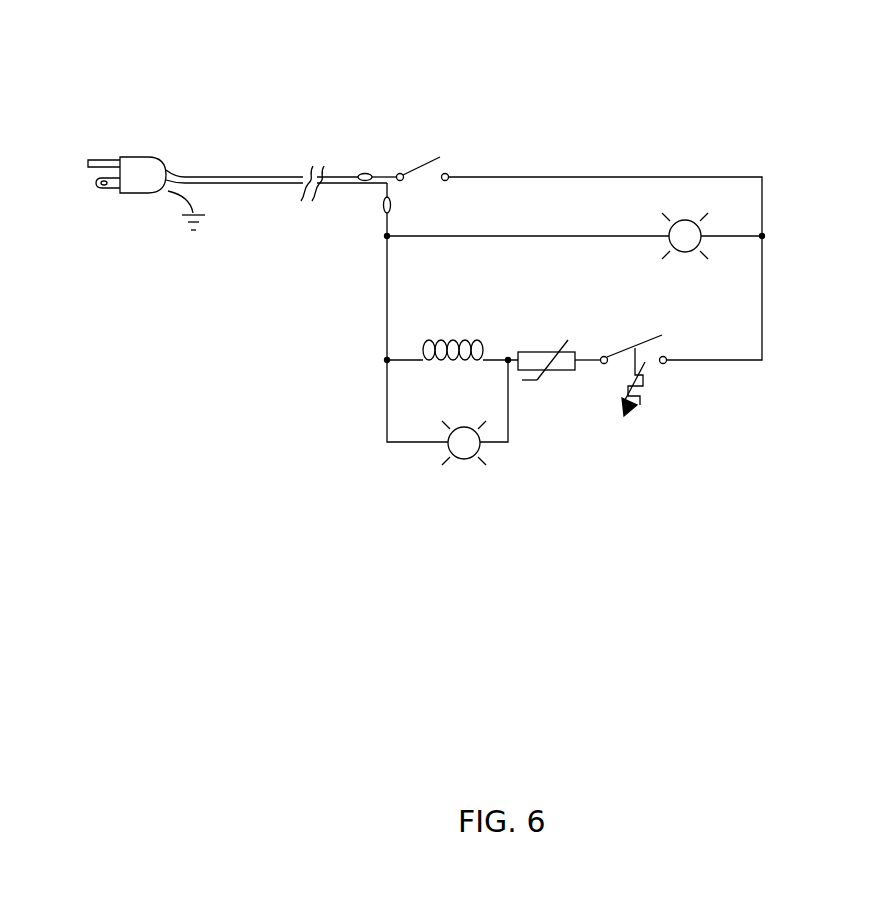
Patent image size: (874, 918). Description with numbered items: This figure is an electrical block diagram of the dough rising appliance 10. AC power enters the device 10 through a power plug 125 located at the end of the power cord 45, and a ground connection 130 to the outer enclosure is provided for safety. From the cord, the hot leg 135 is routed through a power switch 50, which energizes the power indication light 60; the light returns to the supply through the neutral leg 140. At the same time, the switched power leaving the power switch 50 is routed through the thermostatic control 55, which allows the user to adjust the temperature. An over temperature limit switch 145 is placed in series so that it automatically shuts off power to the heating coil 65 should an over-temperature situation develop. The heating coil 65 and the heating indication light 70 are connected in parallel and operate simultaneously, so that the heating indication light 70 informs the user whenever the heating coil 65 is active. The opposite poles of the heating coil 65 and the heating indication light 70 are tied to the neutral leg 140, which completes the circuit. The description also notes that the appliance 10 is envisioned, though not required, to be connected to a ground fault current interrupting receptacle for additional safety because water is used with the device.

The dough rising appliance 10 is at (292, 495).
The power cord 45 is at (247, 177).
The power switch 50 is at (437, 147).
The thermostatic control 55 is at (650, 367).
The power indication light 60 is at (685, 215).
The heating coil 65 is at (430, 343).
The heating indication light 70 is at (455, 460).
The power plug 125 is at (145, 155).
The ground connection 130 is at (193, 233).
The hot leg 135 is at (366, 171).
The neutral leg 140 is at (382, 217).
The over temperature limit switch 145 is at (565, 370).